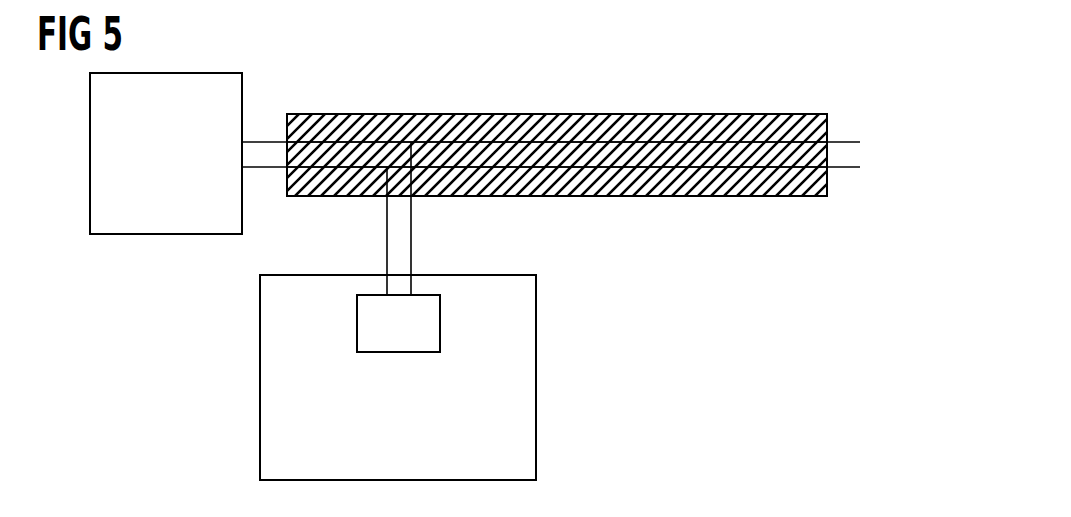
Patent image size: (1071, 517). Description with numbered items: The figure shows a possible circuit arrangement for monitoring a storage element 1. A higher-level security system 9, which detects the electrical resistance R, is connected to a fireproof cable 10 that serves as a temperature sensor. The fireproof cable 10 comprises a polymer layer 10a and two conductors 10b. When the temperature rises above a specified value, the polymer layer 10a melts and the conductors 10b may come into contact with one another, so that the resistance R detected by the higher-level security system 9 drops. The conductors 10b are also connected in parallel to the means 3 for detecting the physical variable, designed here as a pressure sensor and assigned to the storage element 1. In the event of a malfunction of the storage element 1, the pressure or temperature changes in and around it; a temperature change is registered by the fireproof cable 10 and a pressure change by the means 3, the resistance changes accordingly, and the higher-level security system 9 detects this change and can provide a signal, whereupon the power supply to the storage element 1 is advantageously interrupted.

The storage element 1 is at (536, 370).
The means for detecting the physical variable 3 is at (397, 352).
The higher-level security system 9 is at (167, 234).
The fireproof cable 10 is at (740, 110).
The polymer layer 10a is at (516, 114).
The conductors of the fireproof cable 10b is at (586, 114).